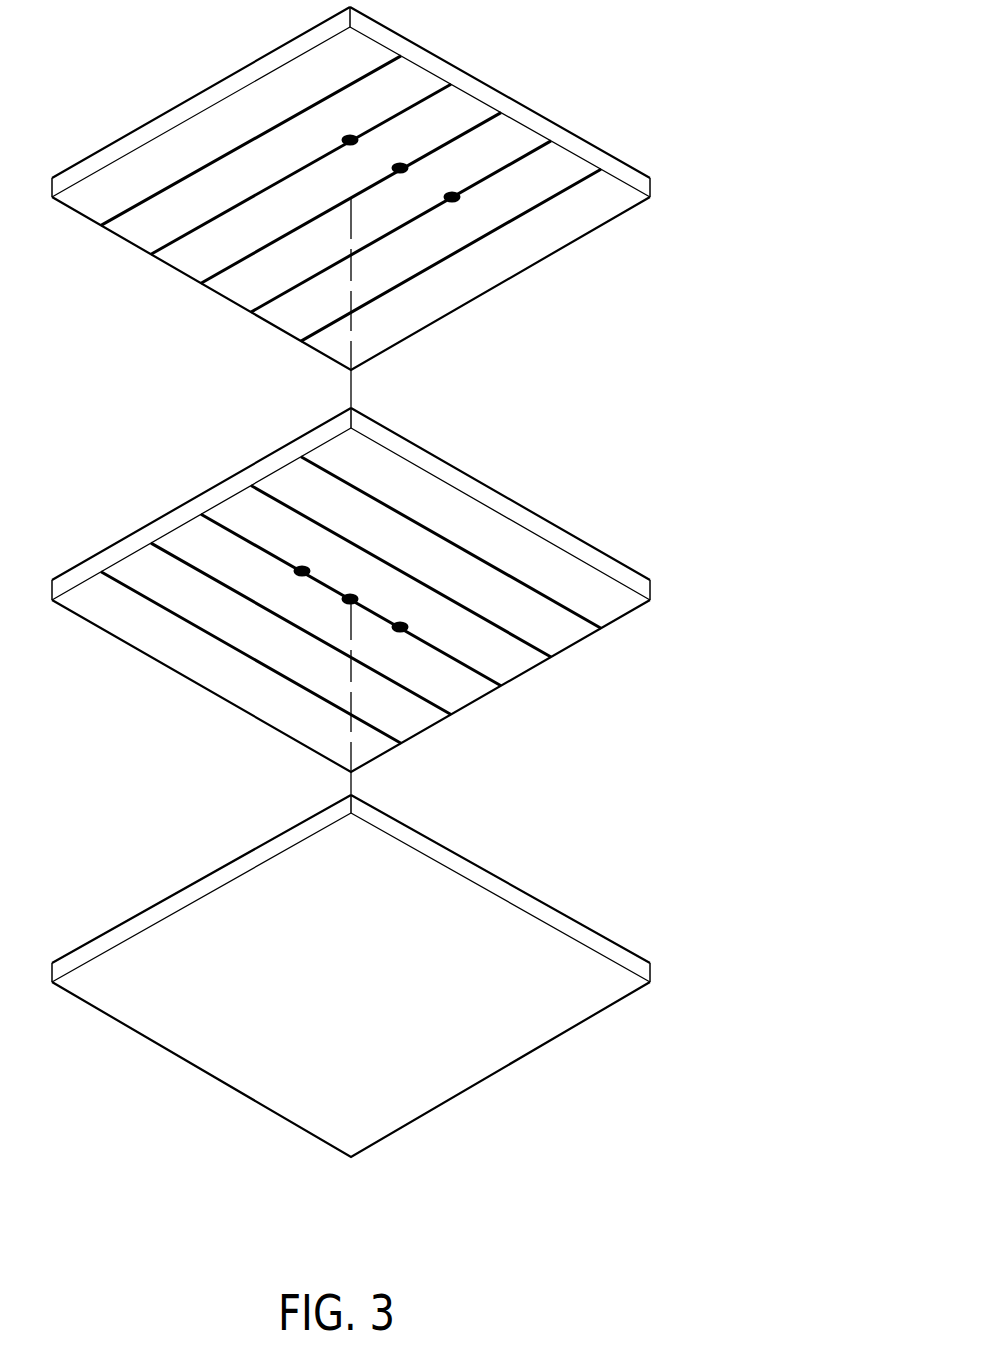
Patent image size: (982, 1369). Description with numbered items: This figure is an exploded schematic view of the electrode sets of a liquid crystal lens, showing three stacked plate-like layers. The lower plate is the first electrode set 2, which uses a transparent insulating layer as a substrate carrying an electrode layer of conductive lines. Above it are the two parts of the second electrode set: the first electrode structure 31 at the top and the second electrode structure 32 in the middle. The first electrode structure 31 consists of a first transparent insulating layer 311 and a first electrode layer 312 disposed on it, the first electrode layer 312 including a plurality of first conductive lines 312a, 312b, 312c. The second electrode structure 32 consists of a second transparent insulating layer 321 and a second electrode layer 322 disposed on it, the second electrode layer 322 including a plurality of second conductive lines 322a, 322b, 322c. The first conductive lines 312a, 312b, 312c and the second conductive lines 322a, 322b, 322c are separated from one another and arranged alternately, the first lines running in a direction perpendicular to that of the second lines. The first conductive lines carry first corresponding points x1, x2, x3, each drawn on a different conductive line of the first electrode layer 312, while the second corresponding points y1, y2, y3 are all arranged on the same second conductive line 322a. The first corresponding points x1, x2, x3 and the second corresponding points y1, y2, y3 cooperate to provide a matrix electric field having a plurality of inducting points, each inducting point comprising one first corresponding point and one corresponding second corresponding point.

The first electrode set 2 is at (500, 888).
The first electrode structure 31 is at (435, 188).
The first transparent insulating layer 311 is at (482, 90).
The first electrode layer 312 is at (433, 198).
The first conductive line 312a is at (382, 124).
The first conductive line 312b is at (426, 154).
The first conductive line 312c is at (474, 185).
The second electrode structure 32 is at (435, 590).
The second transparent insulating layer 321 is at (520, 512).
The second electrode layer 322 is at (433, 600).
The second conductive line 322a is at (447, 652).
The second conductive line 322b is at (513, 635).
The second conductive line 322c is at (594, 625).
The first corresponding point x1 is at (333, 133).
The first corresponding point x2 is at (382, 162).
The first corresponding point x3 is at (433, 190).
The second corresponding point y1 is at (305, 553).
The second corresponding point y2 is at (356, 581).
The second corresponding point y3 is at (406, 610).